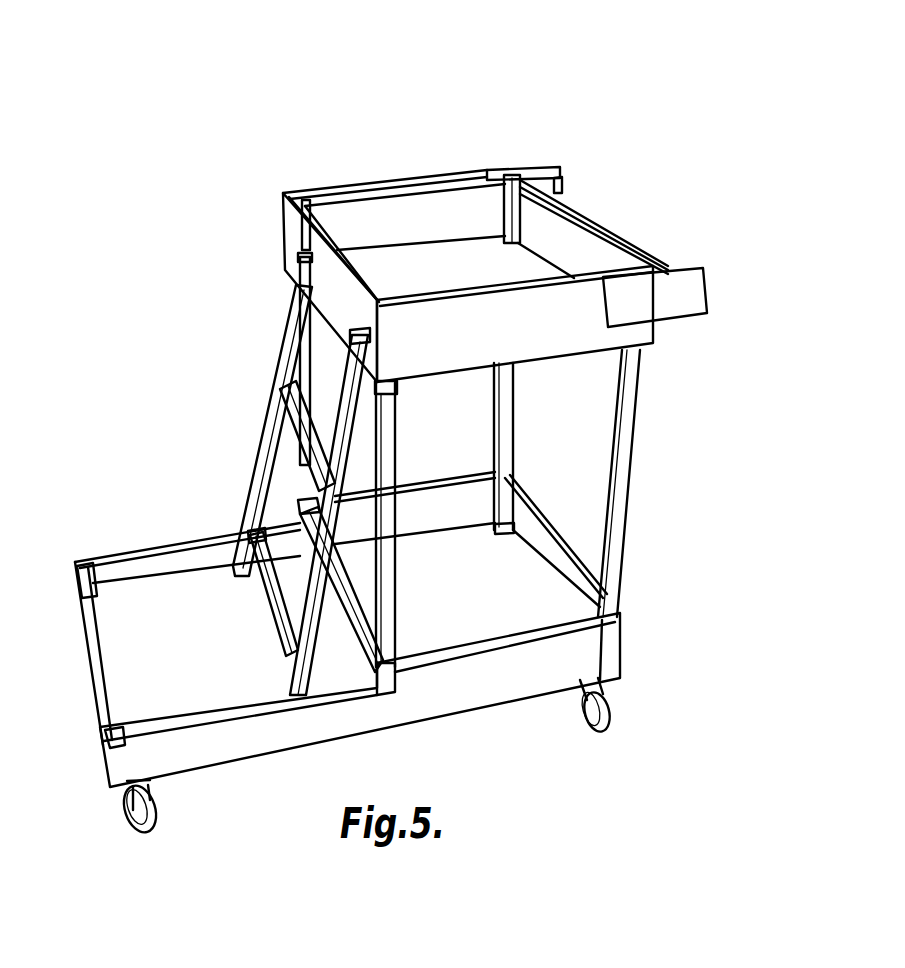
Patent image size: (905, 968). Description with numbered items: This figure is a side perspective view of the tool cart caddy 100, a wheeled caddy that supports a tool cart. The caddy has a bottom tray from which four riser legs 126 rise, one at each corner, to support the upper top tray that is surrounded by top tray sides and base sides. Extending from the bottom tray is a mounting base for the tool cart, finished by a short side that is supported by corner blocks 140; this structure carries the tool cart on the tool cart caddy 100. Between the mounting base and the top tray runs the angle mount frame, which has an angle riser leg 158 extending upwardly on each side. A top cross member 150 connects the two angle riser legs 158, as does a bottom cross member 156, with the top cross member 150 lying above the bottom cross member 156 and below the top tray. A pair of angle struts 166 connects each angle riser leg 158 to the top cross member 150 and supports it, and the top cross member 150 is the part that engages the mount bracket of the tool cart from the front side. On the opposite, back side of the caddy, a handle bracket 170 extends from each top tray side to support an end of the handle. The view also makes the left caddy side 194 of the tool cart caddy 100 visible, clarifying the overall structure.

The tool cart caddy 100 is at (215, 213).
The riser leg 126 is at (298, 193).
The corner block 140 is at (90, 570).
The top cross member 150 is at (308, 440).
The bottom cross member 156 is at (273, 590).
The angle riser leg 158 is at (253, 517).
The angle strut 166 is at (320, 505).
The handle bracket 170 is at (541, 168).
The left caddy side 194 is at (661, 665).